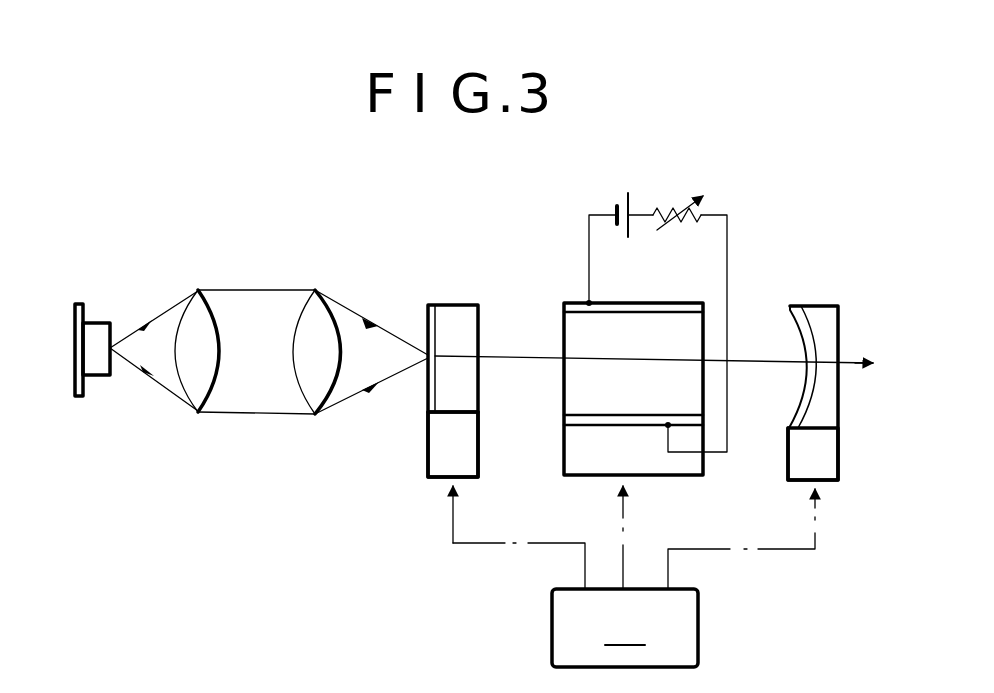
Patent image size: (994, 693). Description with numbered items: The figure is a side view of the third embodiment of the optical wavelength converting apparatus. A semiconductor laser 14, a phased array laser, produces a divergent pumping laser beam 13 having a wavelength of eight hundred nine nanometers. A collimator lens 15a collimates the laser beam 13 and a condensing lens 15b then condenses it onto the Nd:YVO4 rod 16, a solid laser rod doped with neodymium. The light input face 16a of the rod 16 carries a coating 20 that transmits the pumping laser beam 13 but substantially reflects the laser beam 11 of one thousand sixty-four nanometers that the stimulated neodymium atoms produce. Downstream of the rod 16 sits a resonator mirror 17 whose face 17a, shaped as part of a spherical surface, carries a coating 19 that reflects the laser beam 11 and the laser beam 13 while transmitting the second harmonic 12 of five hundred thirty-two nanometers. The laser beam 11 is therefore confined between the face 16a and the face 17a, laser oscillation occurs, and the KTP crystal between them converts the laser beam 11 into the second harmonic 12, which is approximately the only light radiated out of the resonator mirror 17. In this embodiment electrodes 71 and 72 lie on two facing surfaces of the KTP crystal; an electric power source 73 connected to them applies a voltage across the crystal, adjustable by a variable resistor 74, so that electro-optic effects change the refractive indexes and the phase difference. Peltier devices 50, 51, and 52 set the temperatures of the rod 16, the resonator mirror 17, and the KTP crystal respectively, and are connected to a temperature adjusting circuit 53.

The semiconductor laser 14 is at (97, 320).
The laser beam 13 is at (168, 298).
The collimator lens 15a is at (212, 297).
The condensing lens 15b is at (298, 300).
The Nd:YVO4 rod 16 is at (474, 300).
The light input face 16a is at (427, 320).
The coating 20 is at (423, 392).
The Peltier device 50 is at (445, 445).
The laser beam 11 is at (750, 362).
The second harmonic 12 is at (850, 360).
The Peltier device 52 is at (585, 462).
The electrode 71 is at (634, 302).
The electrode 72 is at (585, 424).
The electric power source 73 is at (620, 196).
The variable resistor 74 is at (668, 205).
The resonator mirror 17 is at (820, 296).
The face 17a is at (793, 305).
The coating 19 is at (797, 402).
The Peltier device 51 is at (805, 458).
The temperature adjusting circuit 53 is at (634, 576).